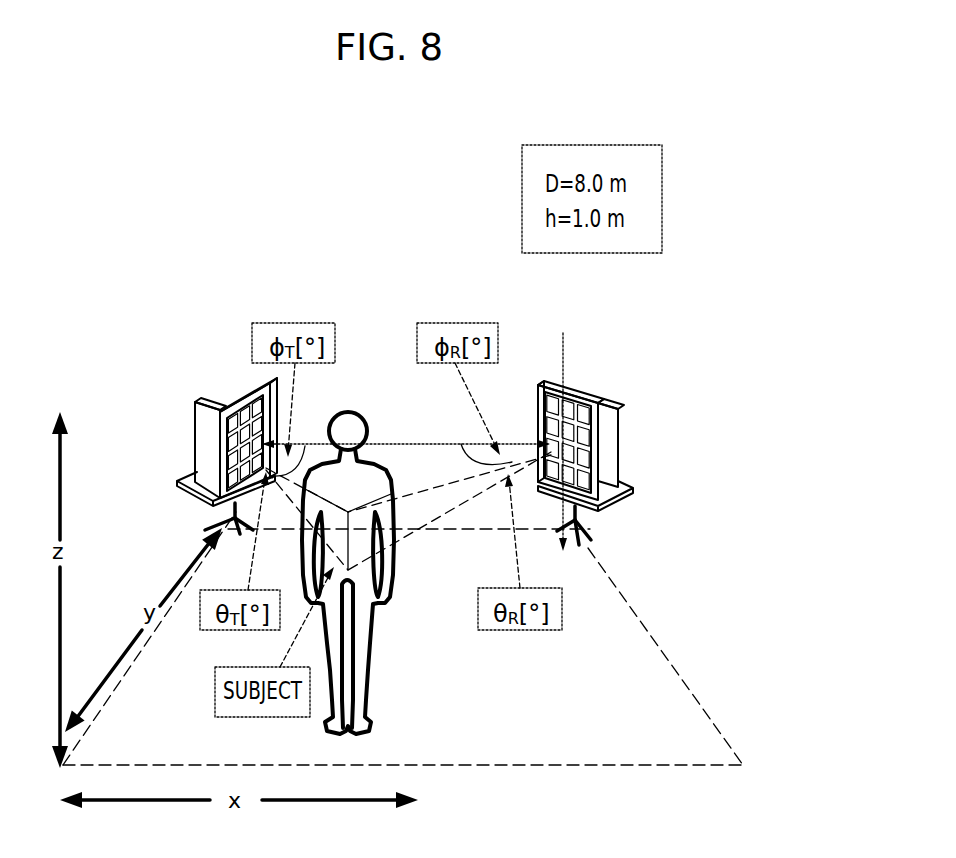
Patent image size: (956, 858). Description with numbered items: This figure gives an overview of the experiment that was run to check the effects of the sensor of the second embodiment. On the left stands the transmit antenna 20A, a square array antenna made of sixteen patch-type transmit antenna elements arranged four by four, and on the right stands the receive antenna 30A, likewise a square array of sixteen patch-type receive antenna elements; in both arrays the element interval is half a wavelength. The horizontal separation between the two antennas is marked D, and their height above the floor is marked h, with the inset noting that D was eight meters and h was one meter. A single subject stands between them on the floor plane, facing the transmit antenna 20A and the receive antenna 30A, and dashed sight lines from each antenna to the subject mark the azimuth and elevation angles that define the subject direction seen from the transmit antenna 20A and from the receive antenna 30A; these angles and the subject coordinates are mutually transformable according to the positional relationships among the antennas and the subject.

The transmit antenna 20A is at (240, 393).
The receive antenna 30A is at (572, 396).
The distance between transmission unit and reception unit D is at (406, 432).
The height of the units above the floor h is at (556, 442).